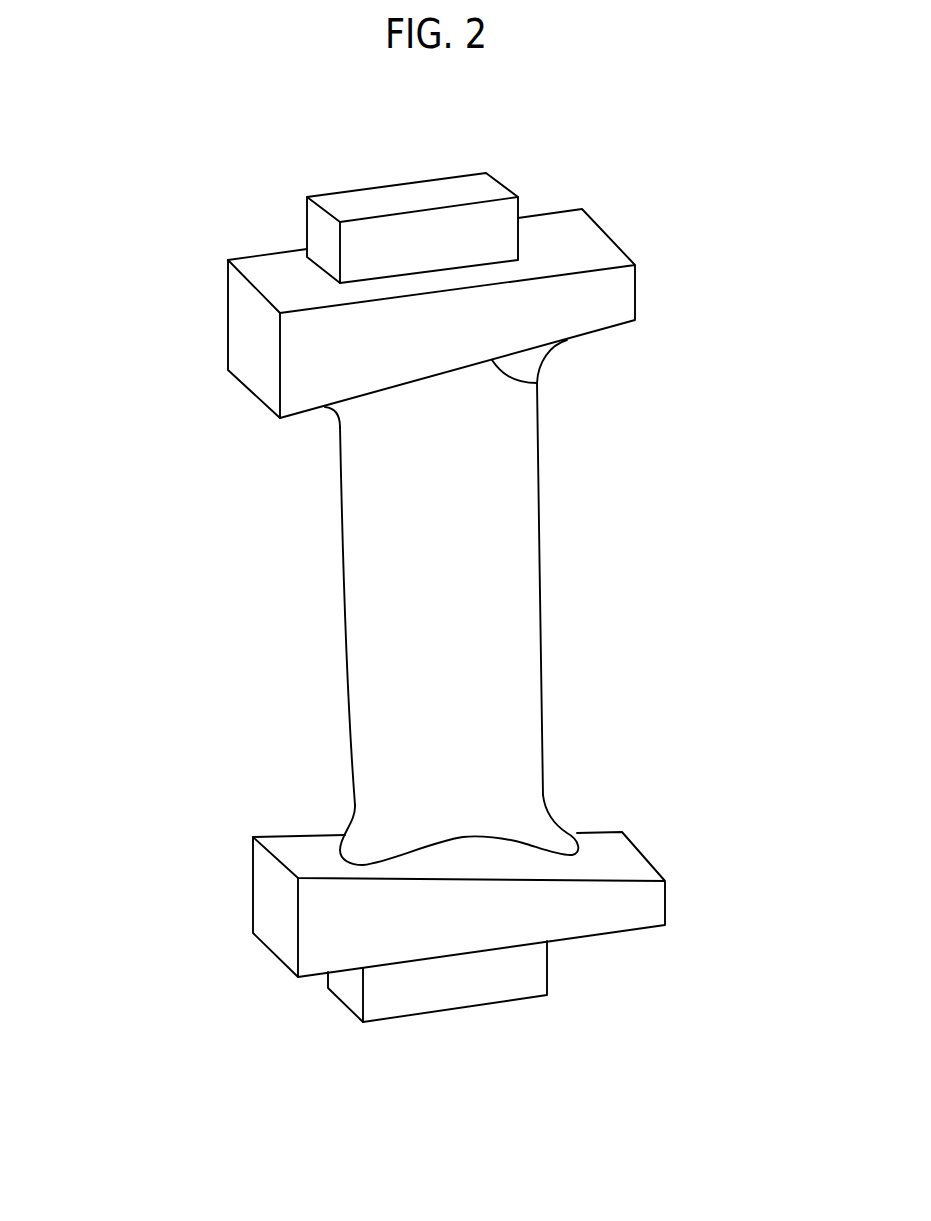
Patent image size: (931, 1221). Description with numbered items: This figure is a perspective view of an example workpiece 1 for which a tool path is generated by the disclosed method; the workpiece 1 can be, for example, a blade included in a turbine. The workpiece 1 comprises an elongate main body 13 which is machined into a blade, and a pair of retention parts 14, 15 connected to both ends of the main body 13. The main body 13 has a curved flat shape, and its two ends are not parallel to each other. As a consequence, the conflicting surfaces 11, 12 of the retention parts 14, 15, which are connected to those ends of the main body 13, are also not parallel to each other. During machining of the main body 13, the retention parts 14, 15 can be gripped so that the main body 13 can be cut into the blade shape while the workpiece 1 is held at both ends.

The workpiece 1 is at (178, 271).
The conflicting surface 11 is at (537, 383).
The conflicting surface 12 is at (600, 857).
The main body 13 is at (488, 572).
The retention part 14 is at (253, 343).
The retention part 15 is at (273, 910).